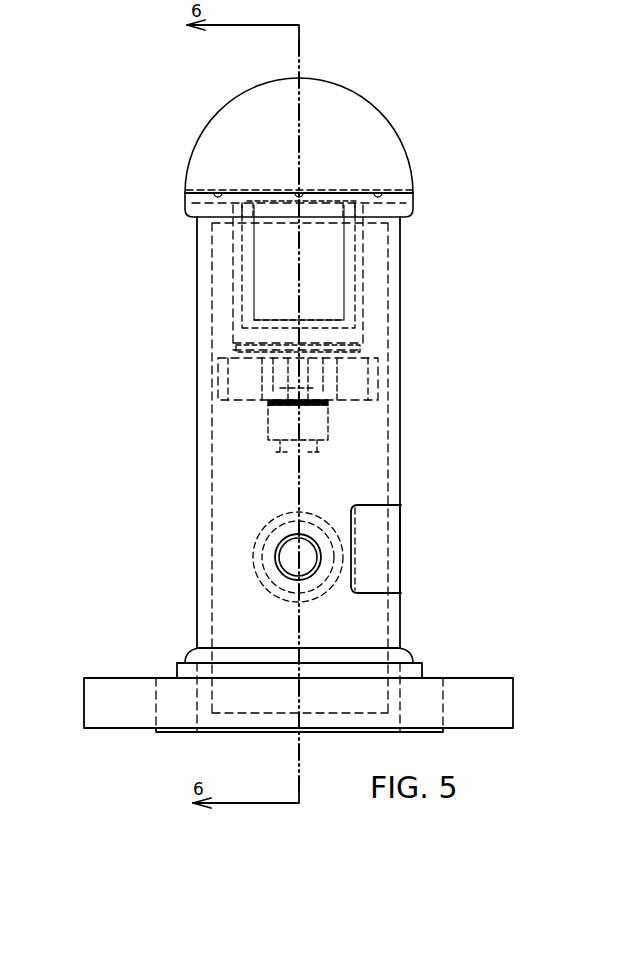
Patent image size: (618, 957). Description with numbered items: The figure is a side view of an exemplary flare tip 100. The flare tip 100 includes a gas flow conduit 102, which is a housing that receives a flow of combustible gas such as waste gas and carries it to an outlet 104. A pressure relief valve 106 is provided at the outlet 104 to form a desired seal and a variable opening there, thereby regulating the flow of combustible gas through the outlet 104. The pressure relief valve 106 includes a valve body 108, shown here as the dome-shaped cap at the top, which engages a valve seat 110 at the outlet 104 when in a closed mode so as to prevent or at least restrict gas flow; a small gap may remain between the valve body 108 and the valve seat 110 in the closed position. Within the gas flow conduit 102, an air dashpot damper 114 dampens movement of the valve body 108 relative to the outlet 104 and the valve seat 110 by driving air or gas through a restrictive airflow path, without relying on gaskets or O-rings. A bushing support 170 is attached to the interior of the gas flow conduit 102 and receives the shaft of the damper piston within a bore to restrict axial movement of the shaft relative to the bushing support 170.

The flare tip 100 is at (118, 85).
The gas flow conduit 102 is at (199, 490).
The outlet 104 is at (372, 241).
The pressure relief valve 106 is at (445, 172).
The valve body 108 is at (365, 127).
The valve seat 110 is at (232, 217).
The air dashpot damper 114 is at (372, 299).
The bushing support 170 is at (375, 376).